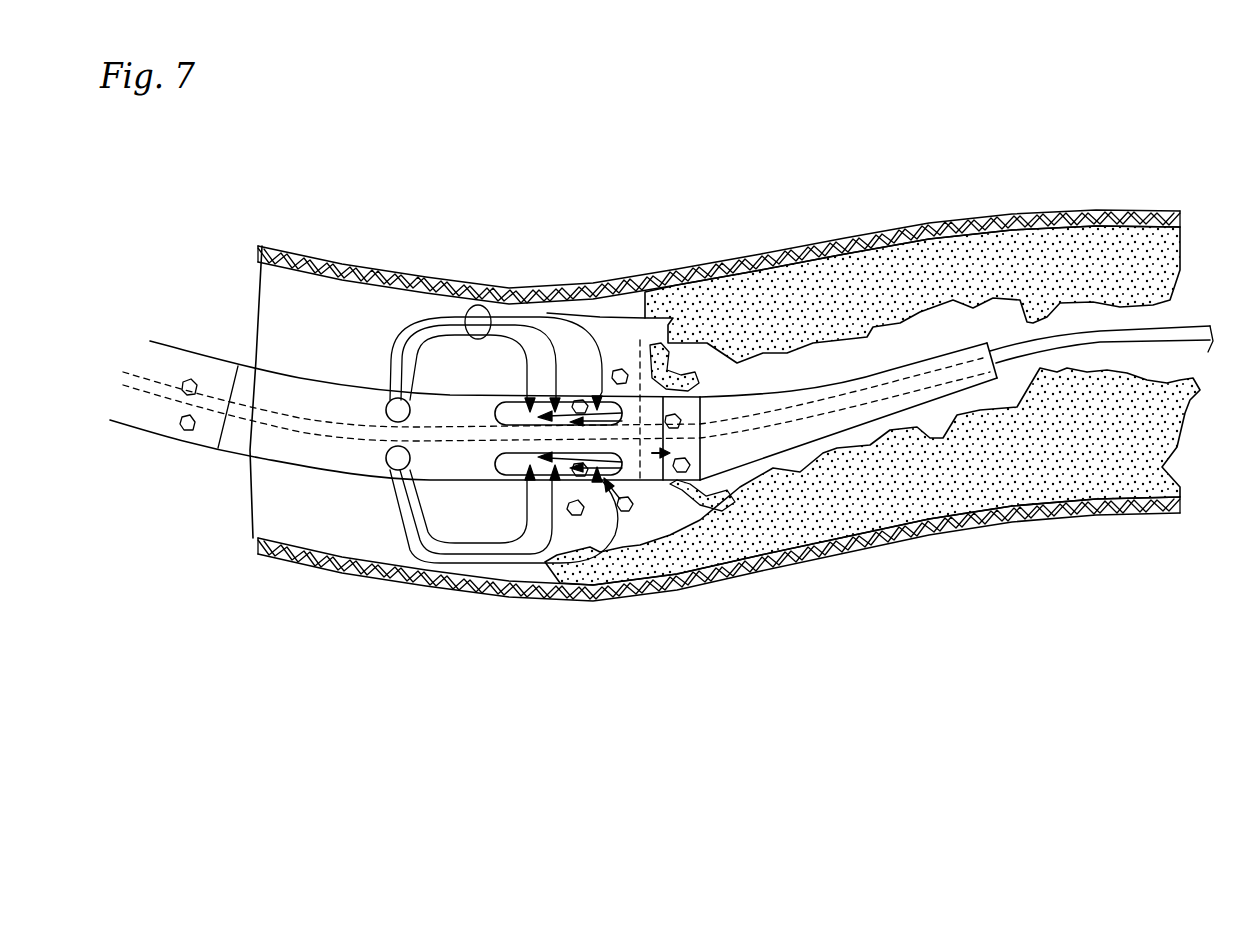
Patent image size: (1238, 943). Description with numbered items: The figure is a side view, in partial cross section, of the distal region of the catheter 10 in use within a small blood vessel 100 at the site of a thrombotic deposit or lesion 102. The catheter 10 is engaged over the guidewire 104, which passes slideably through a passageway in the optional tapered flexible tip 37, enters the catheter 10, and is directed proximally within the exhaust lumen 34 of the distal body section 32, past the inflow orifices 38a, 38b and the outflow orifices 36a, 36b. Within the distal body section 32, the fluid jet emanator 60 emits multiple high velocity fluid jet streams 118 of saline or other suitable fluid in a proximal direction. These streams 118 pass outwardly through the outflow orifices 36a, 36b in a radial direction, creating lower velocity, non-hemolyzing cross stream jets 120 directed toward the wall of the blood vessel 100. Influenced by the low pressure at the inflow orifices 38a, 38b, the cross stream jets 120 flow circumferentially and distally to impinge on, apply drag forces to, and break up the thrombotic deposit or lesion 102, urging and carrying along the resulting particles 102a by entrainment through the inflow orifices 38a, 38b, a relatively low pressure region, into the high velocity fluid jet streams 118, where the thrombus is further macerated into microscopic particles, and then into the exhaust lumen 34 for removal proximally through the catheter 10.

The catheter 10 is at (221, 246).
The distal body section 32 is at (366, 488).
The exhaust lumen 34 is at (292, 445).
The outflow orifice 36a is at (401, 357).
The outflow orifice 36b is at (386, 472).
The tapered flexible tip 37 is at (848, 477).
The inflow orifice 38a is at (534, 396).
The inflow orifice 38b is at (540, 483).
The fluid jet emanator 60 is at (711, 438).
The blood vessel 100 is at (719, 410).
The thrombotic deposit or lesion 102 is at (872, 416).
The particles 102a is at (397, 446).
The guidewire 104 is at (1193, 318).
The high velocity fluid jet streams 118 is at (640, 340).
The cross stream jets 120 is at (488, 310).